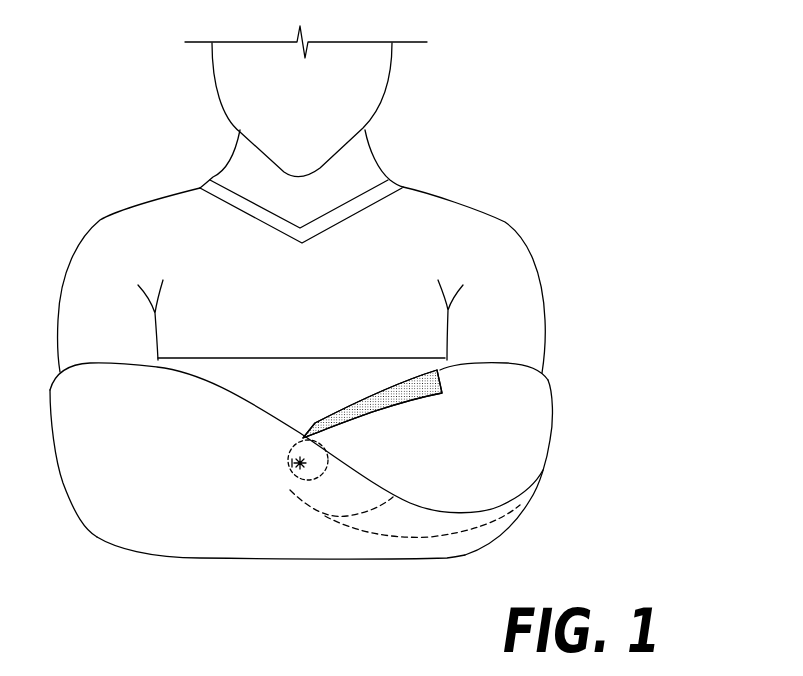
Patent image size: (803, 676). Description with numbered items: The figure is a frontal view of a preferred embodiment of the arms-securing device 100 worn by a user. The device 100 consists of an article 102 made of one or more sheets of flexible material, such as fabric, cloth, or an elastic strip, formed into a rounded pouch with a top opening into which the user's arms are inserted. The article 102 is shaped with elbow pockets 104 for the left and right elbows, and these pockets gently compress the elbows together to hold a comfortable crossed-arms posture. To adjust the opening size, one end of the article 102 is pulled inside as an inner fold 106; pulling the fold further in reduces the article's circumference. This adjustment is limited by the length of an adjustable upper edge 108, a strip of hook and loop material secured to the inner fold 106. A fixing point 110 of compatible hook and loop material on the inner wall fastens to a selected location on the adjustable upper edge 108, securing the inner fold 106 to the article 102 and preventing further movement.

The arms-securing device 100 is at (600, 338).
The article 102 is at (230, 558).
The elbow pockets 104 is at (120, 522).
The inner fold 106 is at (317, 512).
The adjustable upper edge 108 is at (443, 390).
The fixing point 110 is at (293, 470).